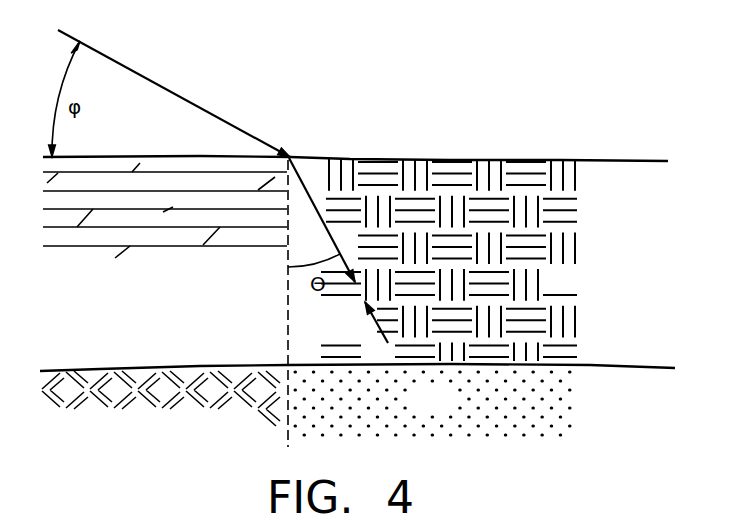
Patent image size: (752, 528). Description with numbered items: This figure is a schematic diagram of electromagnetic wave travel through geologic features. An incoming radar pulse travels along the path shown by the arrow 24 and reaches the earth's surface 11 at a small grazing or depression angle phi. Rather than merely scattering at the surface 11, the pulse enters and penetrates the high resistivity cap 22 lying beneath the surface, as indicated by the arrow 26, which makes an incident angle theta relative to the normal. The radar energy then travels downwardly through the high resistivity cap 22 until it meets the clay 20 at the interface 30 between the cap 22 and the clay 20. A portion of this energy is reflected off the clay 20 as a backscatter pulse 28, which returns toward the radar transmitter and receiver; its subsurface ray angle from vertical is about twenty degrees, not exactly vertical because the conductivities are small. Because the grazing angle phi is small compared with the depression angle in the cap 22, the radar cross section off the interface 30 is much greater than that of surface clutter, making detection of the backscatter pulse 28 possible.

The earth's surface 11 is at (144, 160).
The clay 20 is at (442, 412).
The high resistivity cap 22 is at (571, 285).
The arrow indicating incoming radar pulse path 24 is at (183, 94).
The arrow indicating penetration path 26 is at (323, 228).
The backscatter pulse 28 is at (390, 341).
The interface 30 is at (594, 366).